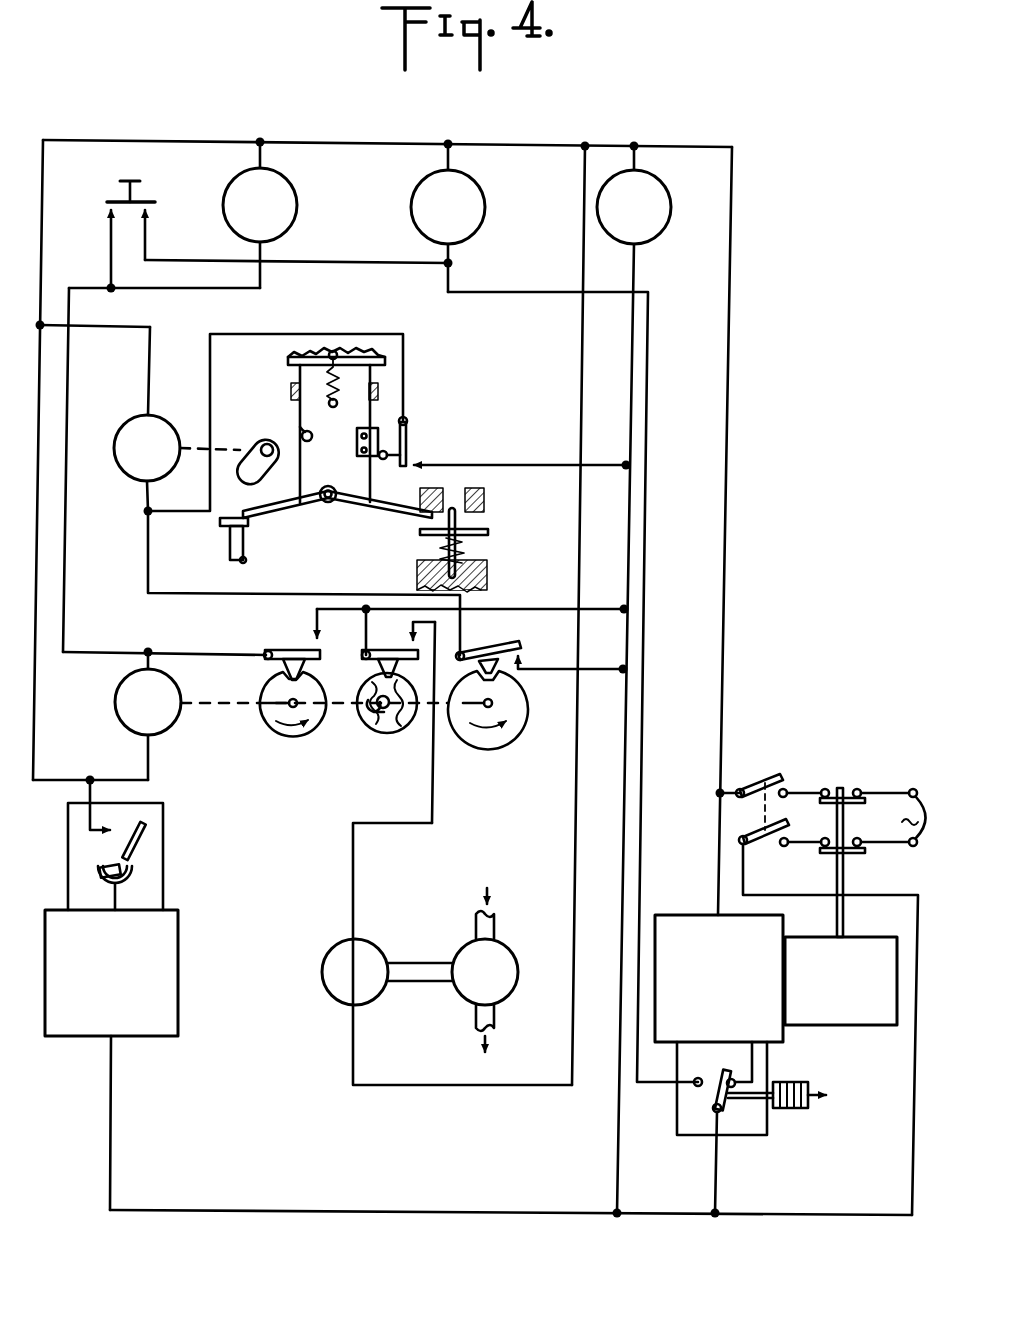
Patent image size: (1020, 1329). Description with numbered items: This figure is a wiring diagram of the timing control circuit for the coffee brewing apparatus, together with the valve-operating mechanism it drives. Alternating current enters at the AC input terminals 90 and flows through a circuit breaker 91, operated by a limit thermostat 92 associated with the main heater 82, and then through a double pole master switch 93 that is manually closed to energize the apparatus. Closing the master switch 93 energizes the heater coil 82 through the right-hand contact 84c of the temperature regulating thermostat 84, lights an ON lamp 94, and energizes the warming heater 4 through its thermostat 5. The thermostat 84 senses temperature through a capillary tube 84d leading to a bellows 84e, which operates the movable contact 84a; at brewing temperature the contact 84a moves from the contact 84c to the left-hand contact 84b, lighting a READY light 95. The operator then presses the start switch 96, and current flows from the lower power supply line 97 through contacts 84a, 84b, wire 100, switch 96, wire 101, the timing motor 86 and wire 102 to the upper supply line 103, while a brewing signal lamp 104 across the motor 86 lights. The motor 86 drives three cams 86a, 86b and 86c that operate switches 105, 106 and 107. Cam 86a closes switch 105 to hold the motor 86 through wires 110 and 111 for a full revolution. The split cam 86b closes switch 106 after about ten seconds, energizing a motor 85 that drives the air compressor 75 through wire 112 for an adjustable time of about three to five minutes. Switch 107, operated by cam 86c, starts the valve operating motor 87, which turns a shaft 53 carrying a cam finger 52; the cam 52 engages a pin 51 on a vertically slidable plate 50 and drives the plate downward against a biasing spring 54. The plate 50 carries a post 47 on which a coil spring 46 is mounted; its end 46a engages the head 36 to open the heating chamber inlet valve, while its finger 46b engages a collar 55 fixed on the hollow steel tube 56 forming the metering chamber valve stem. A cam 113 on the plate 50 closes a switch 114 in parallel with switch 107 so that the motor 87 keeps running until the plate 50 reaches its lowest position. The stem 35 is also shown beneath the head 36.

The warming heater 4 is at (172, 978).
The thermostat 5 is at (156, 870).
The stem 35 is at (225, 550).
The head 36 is at (218, 530).
The coil spring 46 is at (328, 485).
The end of coil spring 46a is at (265, 524).
The finger of coil spring 46b is at (385, 521).
The post 47 is at (330, 503).
The vertically slidable plate 50 is at (290, 377).
The pin 51 is at (300, 423).
The cam finger 52 is at (258, 478).
The shaft 53 is at (265, 445).
The biasing spring 54 is at (385, 384).
The collar 55 is at (488, 536).
The hollow steel tube 56 is at (470, 548).
The air compressor 75 is at (512, 977).
The heater coil 82 is at (677, 915).
The temperature regulating thermostat 84 is at (767, 1062).
The movable contact 84a is at (725, 1118).
The left-hand stationary contact 84b is at (692, 1090).
The right-hand contact 84c is at (740, 1104).
The capillary tube 84d is at (818, 1092).
The bellows 84e is at (830, 1098).
The motor 85 is at (323, 967).
The timing motor 86 is at (118, 724).
The cam 86a is at (275, 735).
The split cam 86b is at (372, 730).
The cam 86c is at (485, 744).
The valve operating motor 87 is at (160, 418).
The AC input terminals 90 is at (915, 789).
The circuit breaker 91 is at (880, 760).
The limit thermostat 92 is at (815, 1025).
The double pole master switch 93 is at (768, 772).
The ON lamp 94 is at (647, 243).
The READY light 95 is at (466, 228).
The start switch 96 is at (153, 191).
The lower power supply line 97 is at (757, 1213).
The wire 100 is at (648, 573).
The wire 101 is at (86, 286).
The wire 102 is at (37, 673).
The upper supply line 103 is at (478, 146).
The brewing signal lamp 104 is at (281, 226).
The switch 105 is at (268, 648).
The switch 106 is at (388, 648).
The switch 107 is at (515, 645).
The wire 110 is at (623, 728).
The wire 111 is at (497, 613).
The wire 112 is at (573, 820).
The cam 113 is at (391, 425).
The switch 114 is at (407, 440).